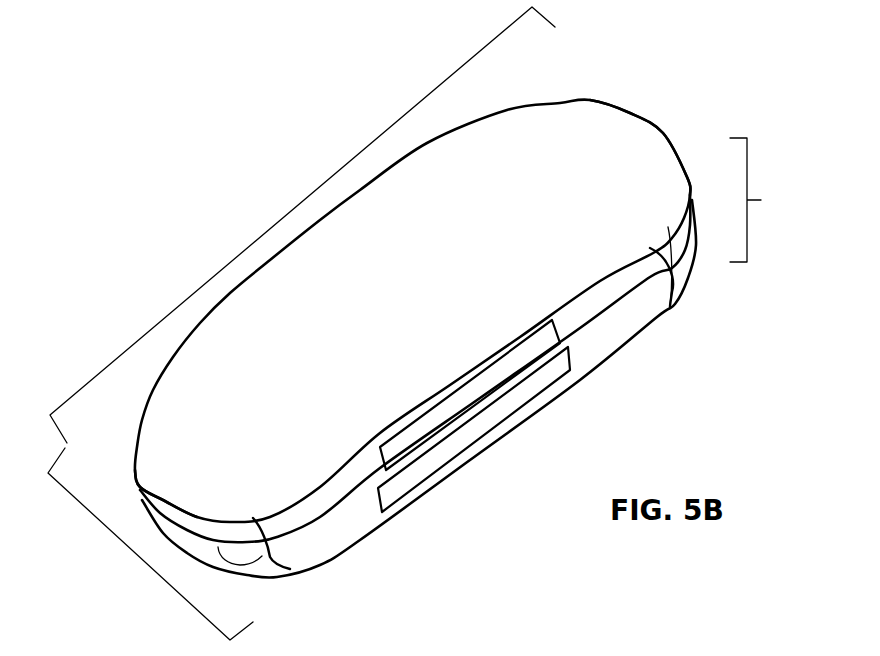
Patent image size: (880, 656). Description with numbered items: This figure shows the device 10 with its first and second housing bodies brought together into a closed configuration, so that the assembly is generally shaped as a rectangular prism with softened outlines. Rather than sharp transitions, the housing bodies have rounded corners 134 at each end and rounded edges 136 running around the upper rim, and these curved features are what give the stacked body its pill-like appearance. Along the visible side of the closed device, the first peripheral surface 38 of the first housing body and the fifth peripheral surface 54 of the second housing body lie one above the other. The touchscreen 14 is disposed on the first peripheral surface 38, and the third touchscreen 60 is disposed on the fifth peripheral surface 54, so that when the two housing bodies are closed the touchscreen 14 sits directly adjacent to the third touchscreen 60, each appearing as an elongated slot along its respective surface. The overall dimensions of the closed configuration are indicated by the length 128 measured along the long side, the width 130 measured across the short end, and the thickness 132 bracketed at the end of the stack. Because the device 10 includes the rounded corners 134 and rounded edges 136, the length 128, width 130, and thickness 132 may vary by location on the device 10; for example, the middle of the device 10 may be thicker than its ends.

The device 10 is at (146, 211).
The touchscreen 14 is at (500, 412).
The first peripheral surface 38 is at (618, 318).
The fifth peripheral surface 54 is at (622, 273).
The third touchscreen 60 is at (495, 375).
The length 128 is at (291, 210).
The width 130 is at (137, 558).
The thickness 132 is at (767, 200).
The rounded corners 134 is at (668, 227).
The rounded edges 136 is at (630, 113).